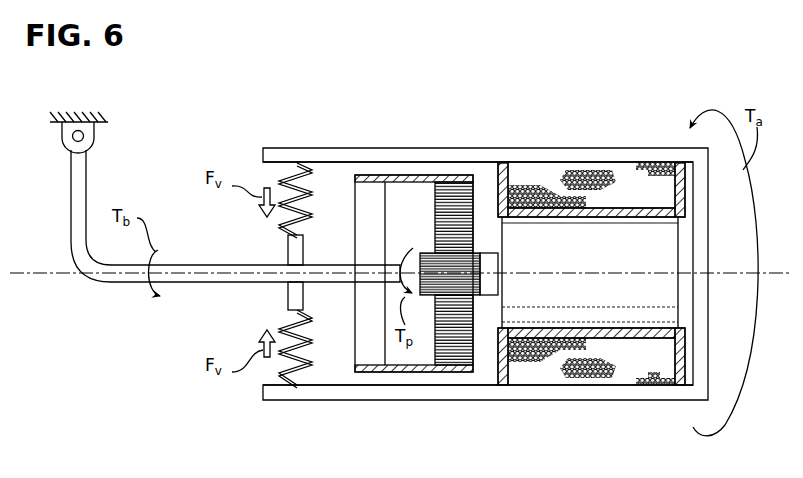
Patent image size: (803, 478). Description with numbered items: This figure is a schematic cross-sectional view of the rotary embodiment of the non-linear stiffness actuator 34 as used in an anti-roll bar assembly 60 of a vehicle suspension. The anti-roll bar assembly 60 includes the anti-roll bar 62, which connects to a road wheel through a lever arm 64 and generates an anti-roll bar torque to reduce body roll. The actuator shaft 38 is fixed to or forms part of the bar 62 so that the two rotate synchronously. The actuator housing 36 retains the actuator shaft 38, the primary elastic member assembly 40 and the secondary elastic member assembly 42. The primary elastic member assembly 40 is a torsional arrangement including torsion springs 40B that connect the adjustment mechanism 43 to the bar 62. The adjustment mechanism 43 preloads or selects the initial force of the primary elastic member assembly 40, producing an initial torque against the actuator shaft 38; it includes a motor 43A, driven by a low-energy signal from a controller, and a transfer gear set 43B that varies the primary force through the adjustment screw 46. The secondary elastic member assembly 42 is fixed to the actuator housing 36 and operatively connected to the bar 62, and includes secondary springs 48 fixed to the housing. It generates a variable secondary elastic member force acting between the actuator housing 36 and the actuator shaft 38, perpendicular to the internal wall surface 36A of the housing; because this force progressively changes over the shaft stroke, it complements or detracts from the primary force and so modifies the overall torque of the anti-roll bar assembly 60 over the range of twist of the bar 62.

The non-linear stiffness actuator 34 is at (650, 140).
The actuator housing 36 is at (577, 160).
The internal wall surface 36A is at (321, 383).
The actuator shaft 38 is at (322, 265).
The primary elastic member assembly 40 is at (387, 212).
The torsion spring 40B is at (368, 200).
The secondary elastic member assembly 42 is at (272, 226).
The adjustment mechanism 43 is at (491, 356).
The motor 43A is at (590, 272).
The transfer gear set 43B is at (448, 373).
The adjustment screw 46 is at (488, 252).
The secondary spring 48 is at (282, 178).
The anti-roll bar assembly 60 is at (148, 345).
The anti-roll bar 62 is at (200, 283).
The lever arm 64 is at (71, 200).